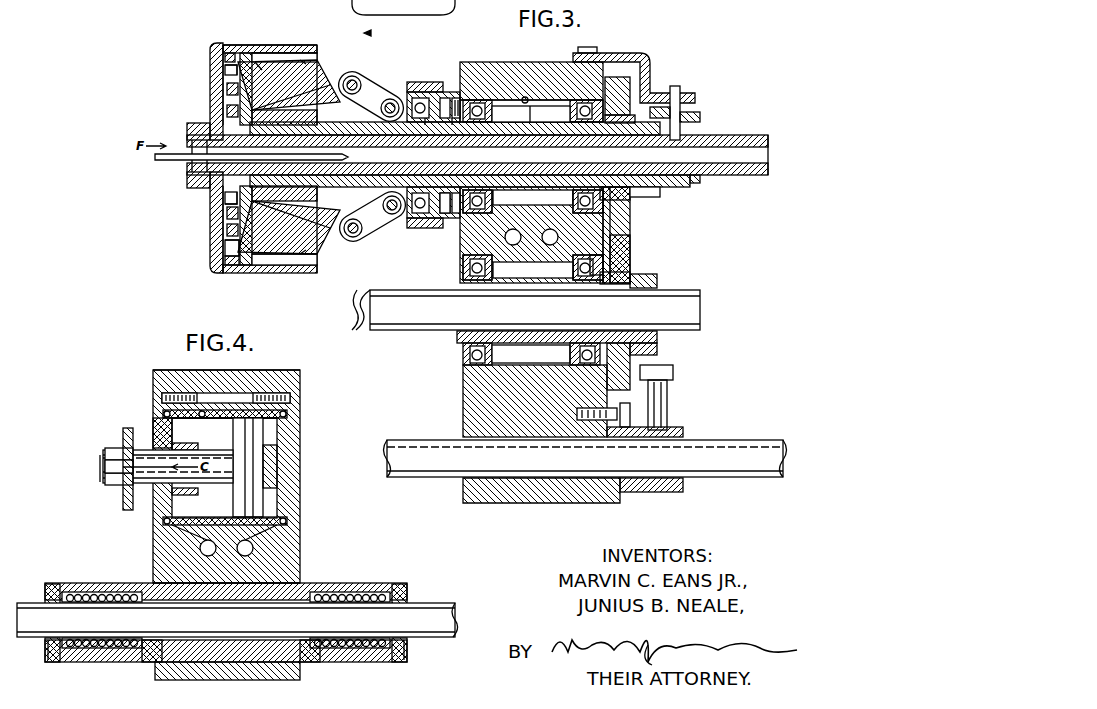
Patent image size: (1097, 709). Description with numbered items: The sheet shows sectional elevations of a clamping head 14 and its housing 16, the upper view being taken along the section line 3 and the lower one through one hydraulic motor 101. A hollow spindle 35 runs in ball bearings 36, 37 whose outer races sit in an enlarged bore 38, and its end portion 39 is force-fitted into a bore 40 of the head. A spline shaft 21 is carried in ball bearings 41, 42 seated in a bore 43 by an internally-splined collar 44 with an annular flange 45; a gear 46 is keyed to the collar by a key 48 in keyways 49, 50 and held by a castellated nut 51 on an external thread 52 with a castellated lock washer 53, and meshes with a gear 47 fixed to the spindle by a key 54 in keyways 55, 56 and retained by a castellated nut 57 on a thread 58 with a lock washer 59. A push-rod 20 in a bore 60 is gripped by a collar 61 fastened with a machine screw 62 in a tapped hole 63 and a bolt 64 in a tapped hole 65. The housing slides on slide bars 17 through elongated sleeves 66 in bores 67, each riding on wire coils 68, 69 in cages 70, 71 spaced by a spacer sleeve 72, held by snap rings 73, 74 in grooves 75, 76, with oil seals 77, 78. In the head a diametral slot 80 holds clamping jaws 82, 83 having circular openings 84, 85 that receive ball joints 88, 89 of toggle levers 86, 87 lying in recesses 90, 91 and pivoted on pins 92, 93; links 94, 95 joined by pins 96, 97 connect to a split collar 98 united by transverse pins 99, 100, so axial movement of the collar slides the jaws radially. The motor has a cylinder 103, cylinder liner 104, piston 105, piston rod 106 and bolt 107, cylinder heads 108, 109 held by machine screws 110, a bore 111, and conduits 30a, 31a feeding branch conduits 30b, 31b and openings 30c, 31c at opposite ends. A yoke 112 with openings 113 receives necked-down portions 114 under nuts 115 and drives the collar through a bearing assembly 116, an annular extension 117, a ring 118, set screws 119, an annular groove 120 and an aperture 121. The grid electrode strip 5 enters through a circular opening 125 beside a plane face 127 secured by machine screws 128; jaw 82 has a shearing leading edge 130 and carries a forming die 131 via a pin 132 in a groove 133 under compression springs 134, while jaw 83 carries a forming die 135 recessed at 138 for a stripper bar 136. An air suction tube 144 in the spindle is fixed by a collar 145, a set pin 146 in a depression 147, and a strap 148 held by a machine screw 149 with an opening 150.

In FIG. 3, the section line 3 is at (404, 17).
In FIG. 3, the grid electrode strip 5 is at (166, 160).
In FIG. 3, the clamping head 14 is at (270, 32).
In FIG. 3, the housing 16 is at (541, 62).
In FIG. 4, the housing 16 is at (272, 370).
In FIG. 3, the slide bars 17 is at (357, 305).
In FIG. 4, the slide bars 17 is at (448, 604).
In FIG. 3, the push-rod 20 is at (410, 440).
In FIG. 3, the spline shaft 21 is at (700, 313).
In FIG. 4, the conduit 30a is at (200, 554).
In FIG. 4, the branch conduits 30b is at (192, 530).
In FIG. 4, the opening 30c is at (195, 518).
In FIG. 3, the conduit 31a is at (505, 236).
In FIG. 4, the conduit 31a is at (253, 553).
In FIG. 3, the branch conduits 31b is at (558, 236).
In FIG. 4, the branch conduits 31b is at (262, 532).
In FIG. 4, the opening 31c is at (283, 516).
In FIG. 3, the hollow spindle 35 is at (531, 114).
In FIG. 3, the ball bearing 36 is at (477, 105).
In FIG. 3, the ball bearing 37 is at (580, 105).
In FIG. 3, the enlarged bore 38 is at (525, 97).
In FIG. 3, the end portion 39 is at (265, 196).
In FIG. 3, the bore 40 is at (318, 202).
In FIG. 3, the ball bearing 41 is at (462, 268).
In FIG. 3, the ball bearing 42 is at (596, 262).
In FIG. 3, the bore 43 is at (533, 270).
In FIG. 3, the internally-splined collar 44 is at (462, 337).
In FIG. 3, the annular flange 45 is at (466, 352).
In FIG. 3, the gear 46 is at (628, 245).
In FIG. 3, the gear 47 is at (620, 218).
In FIG. 3, the key 48 is at (628, 275).
In FIG. 3, the keyway 49 is at (595, 280).
In FIG. 3, the keyway 50 is at (658, 280).
In FIG. 3, the castellated nut 51 is at (632, 348).
In FIG. 3, the external thread 52 is at (658, 343).
In FIG. 3, the castellated lock washer 53 is at (630, 360).
In FIG. 3, the key 54 is at (598, 135).
In FIG. 3, the keyway 55 is at (546, 114).
In FIG. 3, the keyway 56 is at (630, 110).
In FIG. 3, the castellated nut 57 is at (660, 195).
In FIG. 3, the thread 58 is at (620, 125).
In FIG. 3, the castellated lock washer 59 is at (628, 200).
In FIG. 3, the bore 60 is at (470, 440).
In FIG. 3, the collar 61 is at (652, 485).
In FIG. 3, the machine screw 62 is at (630, 415).
In FIG. 3, the tapped hole 63 is at (590, 420).
In FIG. 3, the bolt 64 is at (668, 392).
In FIG. 3, the tapped hole 65 is at (680, 430).
In FIG. 4, the elongated sleeve 66 is at (370, 583).
In FIG. 4, the bore 67 is at (160, 584).
In FIG. 4, the wire coil 68 is at (98, 648).
In FIG. 4, the wire coil 69 is at (355, 648).
In FIG. 4, the cage 70 is at (130, 652).
In FIG. 4, the cage 71 is at (374, 652).
In FIG. 4, the spacer sleeve 72 is at (250, 655).
In FIG. 4, the snap ring 73 is at (46, 651).
In FIG. 4, the snap ring 74 is at (407, 650).
In FIG. 4, the groove 75 is at (48, 660).
In FIG. 4, the groove 76 is at (404, 660).
In FIG. 4, the oil seal 77 is at (48, 592).
In FIG. 4, the oil seal 78 is at (407, 594).
In FIG. 3, the diametral slot 80 is at (225, 57).
In FIG. 3, the clamping jaw 82 is at (226, 70).
In FIG. 3, the clamping jaw 83 is at (226, 250).
In FIG. 3, the circular opening 84 is at (215, 46).
In FIG. 3, the circular opening 85 is at (226, 266).
In FIG. 3, the toggle lever 86 is at (300, 60).
In FIG. 3, the toggle lever 87 is at (302, 254).
In FIG. 3, the ball joint 88 is at (256, 63).
In FIG. 3, the ball joint 89 is at (257, 254).
In FIG. 3, the recess 90 is at (284, 54).
In FIG. 3, the recess 91 is at (284, 261).
In FIG. 3, the pin 92 is at (365, 78).
In FIG. 3, the pin 93 is at (330, 228).
In FIG. 3, the link 94 is at (390, 103).
In FIG. 3, the link 95 is at (390, 214).
In FIG. 3, the pin 96 is at (355, 82).
In FIG. 3, the pin 97 is at (355, 238).
In FIG. 3, the split collar 98 is at (418, 98).
In FIG. 3, the transverse pin 99 is at (382, 110).
In FIG. 3, the transverse pin 100 is at (394, 210).
In FIG. 4, the hydraulic motor 101 is at (210, 388).
In FIG. 4, the cylinder 103 is at (200, 418).
In FIG. 4, the cylinder liner 104 is at (222, 426).
In FIG. 4, the piston 105 is at (258, 445).
In FIG. 4, the piston rod 106 is at (220, 470).
In FIG. 4, the bolt 107 is at (272, 468).
In FIG. 4, the cylinder head 108 is at (288, 414).
In FIG. 4, the cylinder head 109 is at (160, 418).
In FIG. 4, the machine screws 110 is at (156, 397).
In FIG. 4, the bore 111 is at (156, 485).
In FIG. 3, the yoke 112 is at (445, 98).
In FIG. 4, the yoke 112 is at (124, 500).
In FIG. 4, the opening 113 is at (126, 478).
In FIG. 4, the necked-down portion 114 is at (120, 468).
In FIG. 4, the nut 115 is at (110, 462).
In FIG. 3, the bearing assembly 116 is at (425, 82).
In FIG. 3, the annular extension 117 is at (430, 125).
In FIG. 3, the ring 118 is at (455, 214).
In FIG. 3, the set screws 119 is at (445, 214).
In FIG. 3, the annular groove 120 is at (455, 125).
In FIG. 3, the aperture 121 is at (455, 98).
In FIG. 3, the circular opening 125 is at (190, 178).
In FIG. 3, the plane face 127 is at (227, 231).
In FIG. 3, the machine screws 128 is at (190, 127).
In FIG. 3, the leading edge 130 is at (243, 127).
In FIG. 3, the forming die 131 is at (227, 110).
In FIG. 3, the pin 132 is at (289, 85).
In FIG. 3, the groove 133 is at (284, 111).
In FIG. 3, the compression springs 134 is at (227, 90).
In FIG. 3, the forming die 135 is at (227, 213).
In FIG. 3, the stripper bar 136 is at (243, 186).
In FIG. 3, the recess 138 is at (226, 199).
In FIG. 3, the air suction tube 144 is at (748, 135).
In FIG. 3, the collar 145 is at (692, 122).
In FIG. 3, the set pin 146 is at (680, 114).
In FIG. 3, the depression 147 is at (678, 147).
In FIG. 3, the strap 148 is at (645, 53).
In FIG. 3, the machine screw 149 is at (596, 47).
In FIG. 3, the opening 150 is at (676, 86).